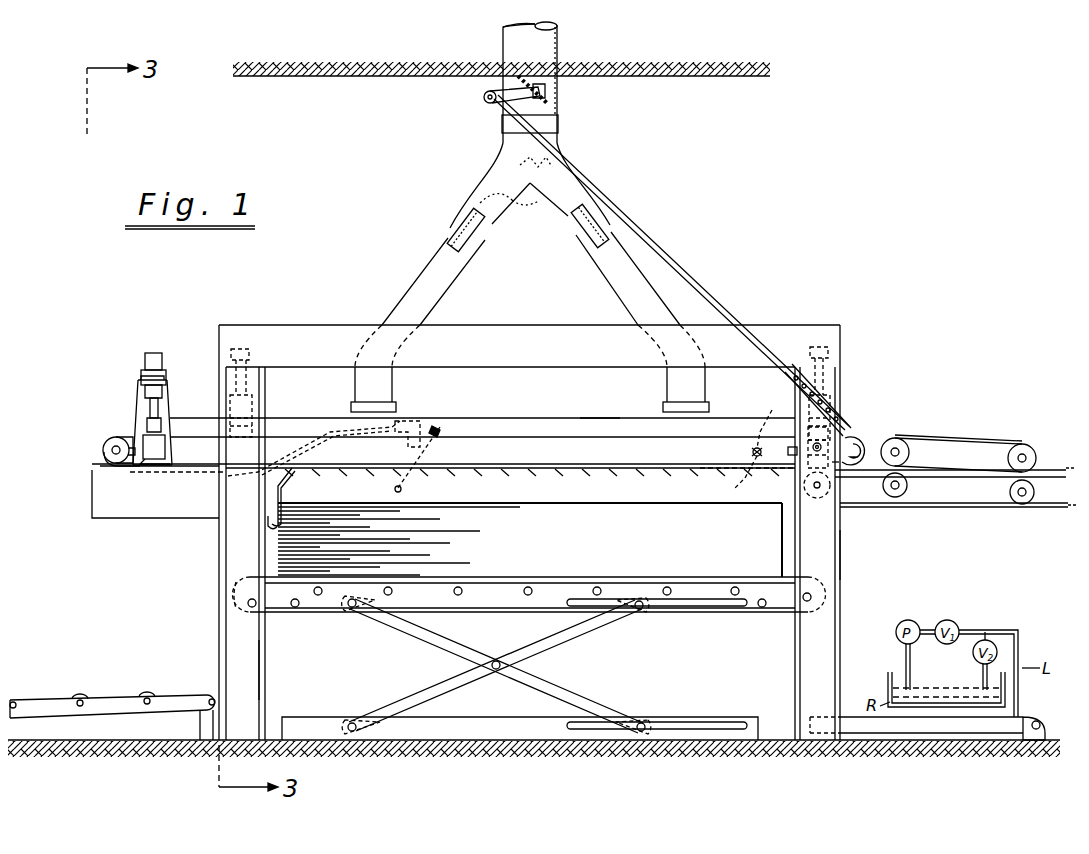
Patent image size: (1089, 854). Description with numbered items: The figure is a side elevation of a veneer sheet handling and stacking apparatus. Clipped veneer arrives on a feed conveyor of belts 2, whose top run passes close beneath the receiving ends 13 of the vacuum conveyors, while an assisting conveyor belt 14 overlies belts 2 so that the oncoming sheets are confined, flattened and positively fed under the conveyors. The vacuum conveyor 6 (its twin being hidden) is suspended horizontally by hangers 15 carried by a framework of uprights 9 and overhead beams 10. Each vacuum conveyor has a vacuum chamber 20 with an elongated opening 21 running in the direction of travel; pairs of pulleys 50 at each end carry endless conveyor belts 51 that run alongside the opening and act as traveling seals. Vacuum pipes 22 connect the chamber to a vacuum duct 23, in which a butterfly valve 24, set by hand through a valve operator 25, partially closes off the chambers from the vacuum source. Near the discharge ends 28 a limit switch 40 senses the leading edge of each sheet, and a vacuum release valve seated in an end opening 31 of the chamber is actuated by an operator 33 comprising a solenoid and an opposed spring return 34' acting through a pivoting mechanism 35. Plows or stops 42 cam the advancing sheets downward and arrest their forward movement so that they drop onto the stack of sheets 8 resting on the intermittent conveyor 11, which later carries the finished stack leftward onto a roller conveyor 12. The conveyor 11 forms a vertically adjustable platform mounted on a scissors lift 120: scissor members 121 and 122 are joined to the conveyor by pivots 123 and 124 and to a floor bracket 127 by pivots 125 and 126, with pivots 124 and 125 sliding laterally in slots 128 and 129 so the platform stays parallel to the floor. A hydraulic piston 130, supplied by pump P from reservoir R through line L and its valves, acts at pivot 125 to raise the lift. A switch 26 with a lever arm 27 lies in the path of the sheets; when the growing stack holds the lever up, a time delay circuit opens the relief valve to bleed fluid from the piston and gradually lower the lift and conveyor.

The belts 2 is at (954, 490).
The vacuum conveyor 6 is at (596, 420).
The stack of sheets 8 is at (558, 504).
The uprights 9 is at (846, 560).
The overhead beams 10 is at (518, 332).
The intermittent conveyor 11 is at (558, 582).
The roller conveyor 12 is at (102, 697).
The receiving ends 13 is at (871, 462).
The assisting conveyor belt 14 is at (962, 440).
The hangers 15 is at (256, 405).
The vacuum chamber 20 is at (525, 428).
The elongated opening 21 is at (642, 470).
The vacuum pipes 22 is at (608, 280).
The vacuum duct 23 is at (540, 44).
The butterfly valve 24 is at (560, 95).
The valve operator 25 is at (690, 272).
The switch 26 is at (775, 409).
The lever arm 27 is at (748, 492).
The discharge ends 28 is at (333, 475).
The end opening 31 is at (148, 386).
The operator 33 is at (136, 406).
The spring return 34' is at (177, 449).
The pivoting mechanism 35 is at (148, 419).
The limit switch 40 is at (444, 424).
The plows or stops 42 is at (282, 480).
The pulleys 50 is at (102, 446).
The endless conveyor belts 51 is at (190, 470).
The scissors lift 120 is at (506, 666).
The scissor member 121 is at (452, 644).
The scissor member 122 is at (428, 680).
The pivot 123 is at (352, 612).
The pivot 124 is at (636, 612).
The pivot 125 is at (644, 718).
The pivot 126 is at (356, 716).
The floor bracket 127 is at (478, 722).
The slot 128 is at (706, 598).
The slot 129 is at (708, 722).
The hydraulic piston 130 is at (856, 716).